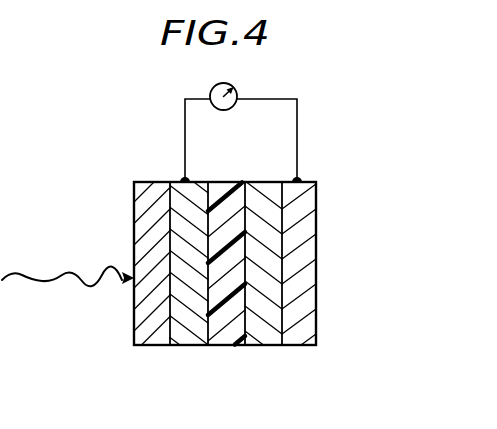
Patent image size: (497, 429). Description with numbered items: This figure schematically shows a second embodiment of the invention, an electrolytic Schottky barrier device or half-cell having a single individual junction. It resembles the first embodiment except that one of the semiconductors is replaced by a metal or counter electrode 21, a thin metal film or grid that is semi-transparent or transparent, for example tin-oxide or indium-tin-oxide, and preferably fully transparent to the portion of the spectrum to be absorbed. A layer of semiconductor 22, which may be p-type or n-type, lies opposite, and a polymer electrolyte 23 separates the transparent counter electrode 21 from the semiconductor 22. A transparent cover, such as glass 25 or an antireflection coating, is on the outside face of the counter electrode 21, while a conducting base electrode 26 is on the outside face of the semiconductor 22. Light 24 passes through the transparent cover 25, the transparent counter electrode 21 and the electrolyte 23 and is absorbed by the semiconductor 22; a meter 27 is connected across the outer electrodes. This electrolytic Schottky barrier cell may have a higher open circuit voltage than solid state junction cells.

The counter electrode 21 is at (195, 338).
The semiconductor 22 is at (265, 338).
The polymer electrolyte 23 is at (230, 338).
The light 24 is at (29, 284).
The glass 25 is at (162, 338).
The conducting base electrode 26 is at (312, 338).
The ammeter 27 is at (221, 110).